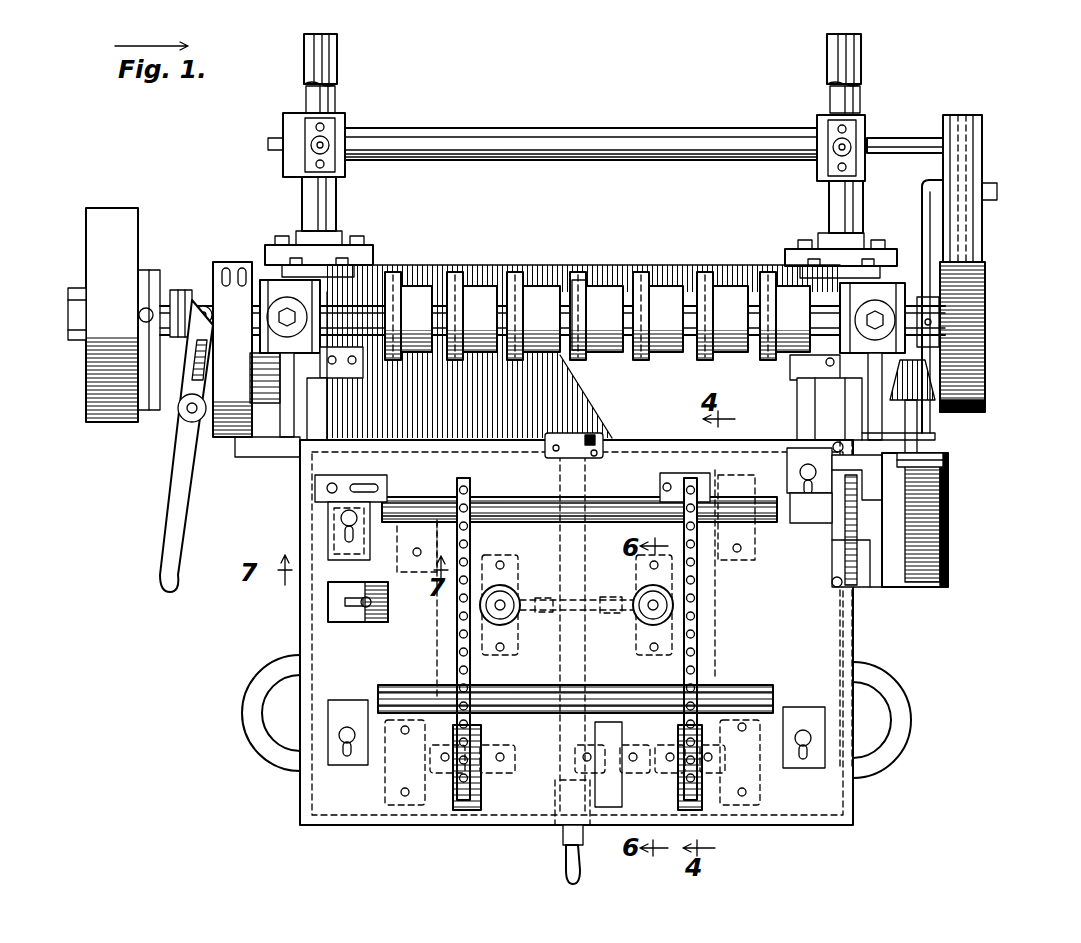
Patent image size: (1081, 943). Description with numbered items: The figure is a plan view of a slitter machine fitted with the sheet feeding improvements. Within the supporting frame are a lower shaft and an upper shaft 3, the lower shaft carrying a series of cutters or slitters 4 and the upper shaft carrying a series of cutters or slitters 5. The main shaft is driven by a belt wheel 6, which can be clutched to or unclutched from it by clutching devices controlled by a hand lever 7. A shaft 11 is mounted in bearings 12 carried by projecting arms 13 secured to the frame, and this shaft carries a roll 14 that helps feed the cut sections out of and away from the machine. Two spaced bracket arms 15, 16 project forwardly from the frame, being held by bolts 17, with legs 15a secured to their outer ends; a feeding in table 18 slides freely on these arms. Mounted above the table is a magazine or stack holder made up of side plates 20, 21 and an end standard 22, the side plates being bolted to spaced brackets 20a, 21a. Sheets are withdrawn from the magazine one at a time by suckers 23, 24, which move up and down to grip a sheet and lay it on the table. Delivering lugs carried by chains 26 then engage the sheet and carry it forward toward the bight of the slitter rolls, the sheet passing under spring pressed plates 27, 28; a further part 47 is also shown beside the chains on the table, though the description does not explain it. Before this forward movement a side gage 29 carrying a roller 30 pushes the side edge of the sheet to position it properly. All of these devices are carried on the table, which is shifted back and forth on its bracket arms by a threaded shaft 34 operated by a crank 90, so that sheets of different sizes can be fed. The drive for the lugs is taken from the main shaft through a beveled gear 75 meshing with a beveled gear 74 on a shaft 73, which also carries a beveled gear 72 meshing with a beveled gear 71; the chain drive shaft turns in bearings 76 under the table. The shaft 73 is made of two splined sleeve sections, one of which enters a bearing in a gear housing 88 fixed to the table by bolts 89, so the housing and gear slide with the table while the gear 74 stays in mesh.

The upper shaft 3 is at (628, 300).
The cutters or slitters 4 is at (572, 288).
The cutters or slitters 5 is at (590, 290).
The belt wheel 6 is at (92, 372).
The hand lever 7 is at (177, 487).
The shaft 11 is at (872, 148).
The bearings 12 is at (338, 125).
The projecting arms 13 is at (338, 198).
The roll 14 is at (531, 132).
The bracket arm 15 is at (313, 428).
The legs 15a is at (272, 715).
The bracket arm 16 is at (880, 435).
The bolts 17 is at (828, 363).
The feeding in table 18 is at (820, 643).
The side plate 20 is at (413, 678).
The brackets 20a is at (336, 752).
The side plate 21 is at (559, 523).
The brackets 21a is at (788, 458).
The end standard 22 is at (366, 627).
The sucker 23 is at (646, 602).
The sucker 24 is at (506, 603).
The chains 26 is at (457, 635).
The spring pressed plate 27 is at (656, 474).
The spring pressed plate 28 is at (471, 478).
The side gage 29 is at (387, 478).
The roller 30 is at (388, 492).
The shaft 34 is at (580, 662).
The chain guide 47 is at (653, 674).
The beveled gear 71 is at (950, 562).
The beveled gear 72 is at (950, 470).
The shaft 73 is at (932, 418).
The beveled gear 74 is at (960, 366).
The beveled gear 75 is at (950, 278).
The bearings 76 is at (627, 504).
The gear housing 88 is at (950, 512).
The bolts 89 is at (836, 444).
The crank 90 is at (566, 866).